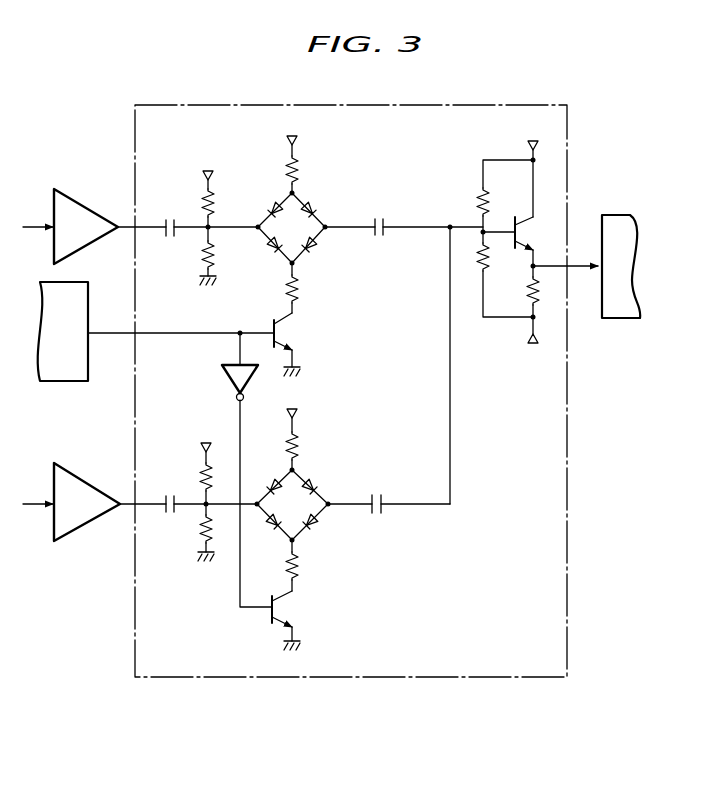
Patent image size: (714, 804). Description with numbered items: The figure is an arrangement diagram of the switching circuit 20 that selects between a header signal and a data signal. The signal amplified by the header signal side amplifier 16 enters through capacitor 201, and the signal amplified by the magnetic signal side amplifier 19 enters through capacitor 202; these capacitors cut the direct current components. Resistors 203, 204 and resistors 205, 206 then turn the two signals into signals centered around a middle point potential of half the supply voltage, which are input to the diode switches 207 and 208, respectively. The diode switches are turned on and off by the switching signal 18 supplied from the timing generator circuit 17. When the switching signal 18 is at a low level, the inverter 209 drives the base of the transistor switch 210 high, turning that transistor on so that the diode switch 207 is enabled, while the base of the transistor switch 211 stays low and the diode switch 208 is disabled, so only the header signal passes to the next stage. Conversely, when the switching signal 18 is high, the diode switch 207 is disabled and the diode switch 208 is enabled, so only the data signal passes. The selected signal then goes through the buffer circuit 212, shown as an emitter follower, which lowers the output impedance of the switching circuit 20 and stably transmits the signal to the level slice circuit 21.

The header signal side amplifier 16 is at (90, 486).
The timing generator circuit 17 is at (88, 314).
The switching signal 18 is at (110, 333).
The magnetic signal side amplifier 19 is at (90, 209).
The switching circuit 20 is at (418, 106).
The level slice circuit 21 is at (617, 214).
The capacitor 201 is at (172, 513).
The capacitor 202 is at (172, 238).
The resistor 203 is at (203, 475).
The resistor 204 is at (213, 522).
The resistor 205 is at (204, 196).
The resistor 206 is at (214, 247).
The diode switch 207 is at (304, 470).
The diode switch 208 is at (303, 195).
The inverter 209 is at (223, 373).
The transistor switch 210 is at (288, 607).
The transistor switch 211 is at (285, 330).
The buffer circuit 212 is at (503, 318).